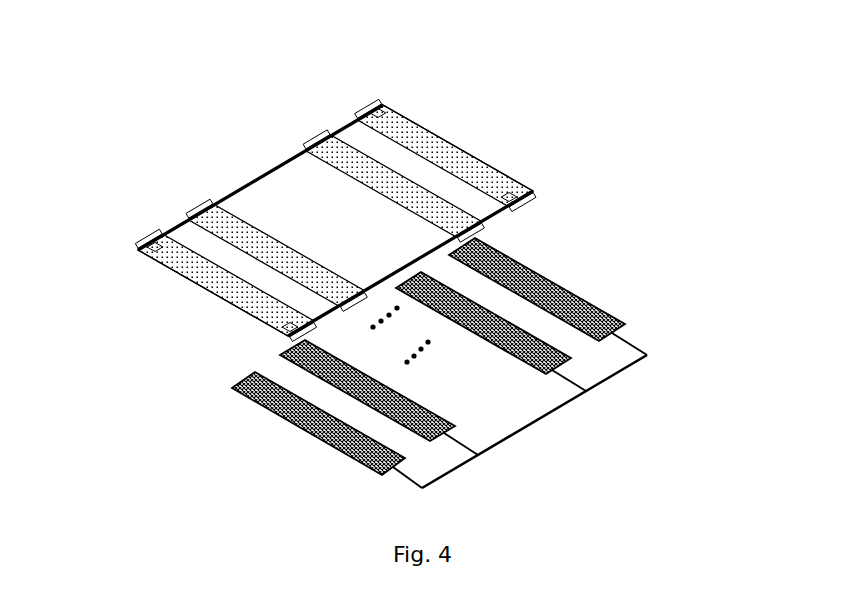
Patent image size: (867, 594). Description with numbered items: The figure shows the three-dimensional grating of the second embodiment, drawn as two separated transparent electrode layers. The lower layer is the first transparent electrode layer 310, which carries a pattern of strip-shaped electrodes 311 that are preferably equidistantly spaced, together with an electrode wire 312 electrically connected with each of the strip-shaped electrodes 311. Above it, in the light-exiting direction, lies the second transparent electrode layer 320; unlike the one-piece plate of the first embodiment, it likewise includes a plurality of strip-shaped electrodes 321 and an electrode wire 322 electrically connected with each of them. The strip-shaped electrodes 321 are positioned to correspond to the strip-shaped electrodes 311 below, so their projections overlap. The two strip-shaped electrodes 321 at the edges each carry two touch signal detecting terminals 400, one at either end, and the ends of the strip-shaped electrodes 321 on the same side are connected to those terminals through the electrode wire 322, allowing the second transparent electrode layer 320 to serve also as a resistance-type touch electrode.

The first transparent electrode layer 310 is at (459, 371).
The strip-shaped electrodes 311 is at (235, 392).
The electrode wire 312 is at (517, 437).
The second transparent electrode layer 320 is at (301, 194).
The strip-shaped electrodes 321 is at (170, 262).
The electrode wire 322 is at (263, 175).
The touch signal detecting terminals 400 is at (155, 245).